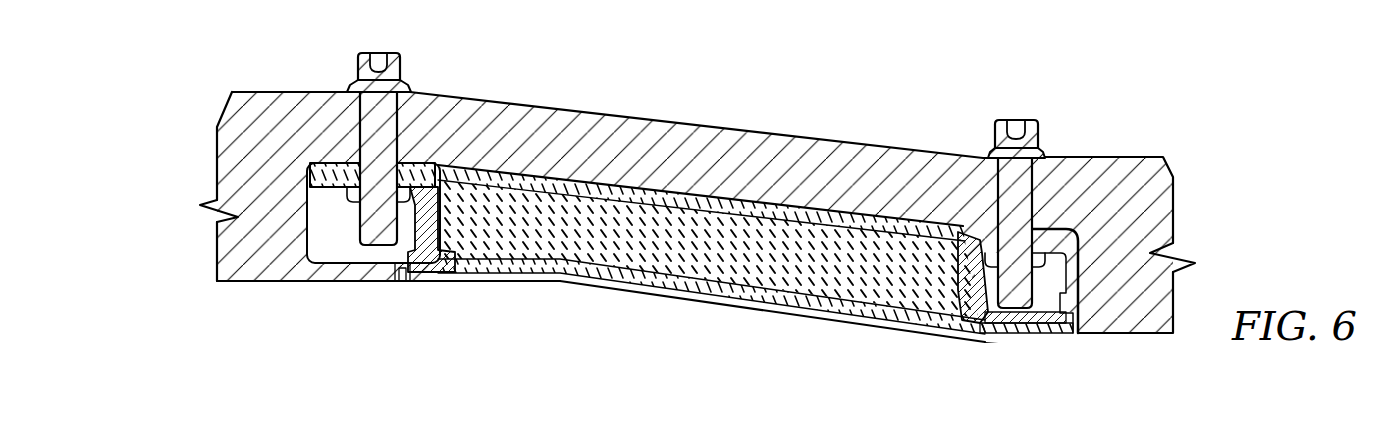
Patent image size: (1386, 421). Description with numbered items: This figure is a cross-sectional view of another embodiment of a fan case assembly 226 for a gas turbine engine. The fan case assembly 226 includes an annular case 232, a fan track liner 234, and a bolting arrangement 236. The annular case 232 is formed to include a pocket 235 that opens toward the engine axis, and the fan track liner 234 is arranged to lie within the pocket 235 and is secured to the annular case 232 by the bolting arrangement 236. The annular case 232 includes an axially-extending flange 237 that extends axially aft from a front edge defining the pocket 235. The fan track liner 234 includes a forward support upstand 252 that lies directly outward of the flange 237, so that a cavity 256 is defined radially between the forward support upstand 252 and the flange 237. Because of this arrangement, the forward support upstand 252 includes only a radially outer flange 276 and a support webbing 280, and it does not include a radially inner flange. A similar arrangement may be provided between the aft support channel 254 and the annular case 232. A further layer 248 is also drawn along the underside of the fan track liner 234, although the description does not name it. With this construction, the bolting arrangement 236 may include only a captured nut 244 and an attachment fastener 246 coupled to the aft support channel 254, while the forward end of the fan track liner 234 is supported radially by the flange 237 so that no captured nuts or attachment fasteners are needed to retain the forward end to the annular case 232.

The fan case assembly 226 is at (573, 80).
The annular case 232 is at (705, 113).
The fan track liner 234 is at (747, 312).
The pocket 235 is at (877, 213).
The bolting arrangement 236 is at (423, 83).
The axially-extending flange 237 is at (387, 284).
The captured nut 244 is at (332, 190).
The attachment fastener 246 is at (353, 62).
The lower facing layer 248 is at (880, 308).
The forward support upstand 252 is at (334, 158).
The aft support channel 254 is at (1060, 222).
The cavity 256 is at (339, 250).
The radially outer flange 276 is at (355, 219).
The support webbing 280 is at (414, 221).